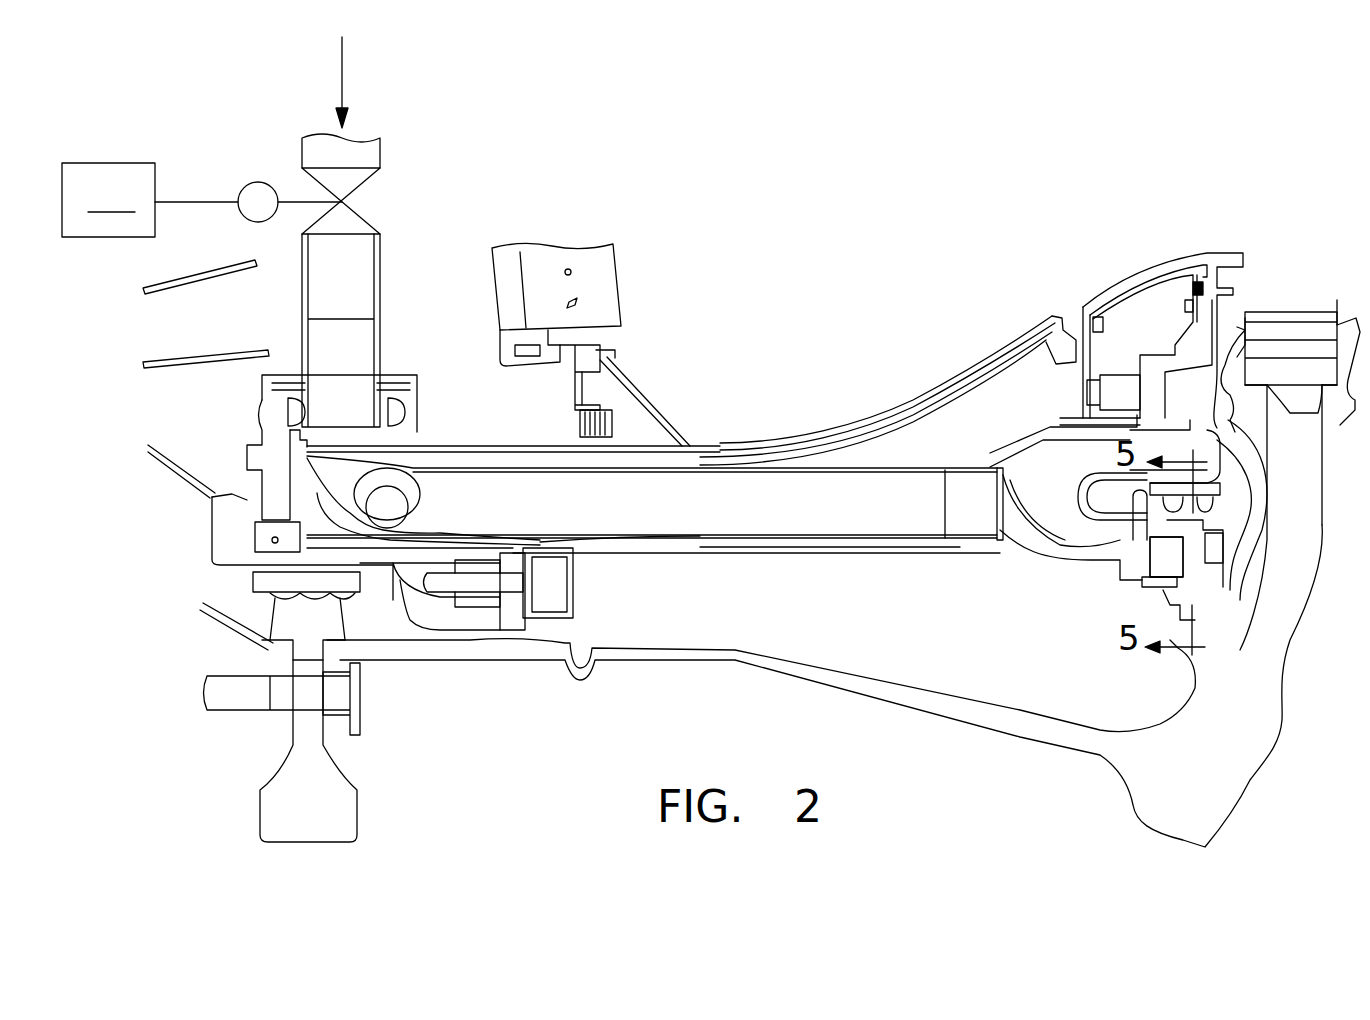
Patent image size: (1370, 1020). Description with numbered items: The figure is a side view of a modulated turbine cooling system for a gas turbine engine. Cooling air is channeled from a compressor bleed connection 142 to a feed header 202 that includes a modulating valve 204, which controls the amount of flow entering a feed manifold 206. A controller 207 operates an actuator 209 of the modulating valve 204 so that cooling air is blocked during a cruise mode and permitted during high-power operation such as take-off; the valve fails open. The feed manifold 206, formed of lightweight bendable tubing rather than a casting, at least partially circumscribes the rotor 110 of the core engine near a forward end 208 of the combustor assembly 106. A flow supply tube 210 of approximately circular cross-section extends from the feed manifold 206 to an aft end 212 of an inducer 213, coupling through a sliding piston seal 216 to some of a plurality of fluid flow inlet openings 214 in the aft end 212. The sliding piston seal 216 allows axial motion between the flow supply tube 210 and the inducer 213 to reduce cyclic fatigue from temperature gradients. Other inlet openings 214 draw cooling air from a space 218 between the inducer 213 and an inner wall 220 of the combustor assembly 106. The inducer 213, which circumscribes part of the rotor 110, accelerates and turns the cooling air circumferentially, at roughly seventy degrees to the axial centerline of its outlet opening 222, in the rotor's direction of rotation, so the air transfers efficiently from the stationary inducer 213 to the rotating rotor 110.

The compressor bleed connection 142 is at (343, 60).
The feed header 202 is at (380, 152).
The modulating valve 204 is at (362, 215).
The feed manifold 206 is at (390, 487).
The controller 207 is at (150, 200).
The forward end 208 is at (590, 234).
The actuator 209 is at (258, 182).
The flow supply tube 210 is at (695, 498).
The aft end 212 is at (1095, 562).
The inducer 213 is at (775, 552).
The fluid flow inlet openings 214 is at (987, 512).
The sliding piston seal 216 is at (1010, 545).
The space 218 is at (983, 455).
The inner wall 220 is at (957, 397).
The outlet opening 222 is at (1185, 556).
The combustor assembly 106 is at (820, 357).
The rotor 110 is at (885, 683).